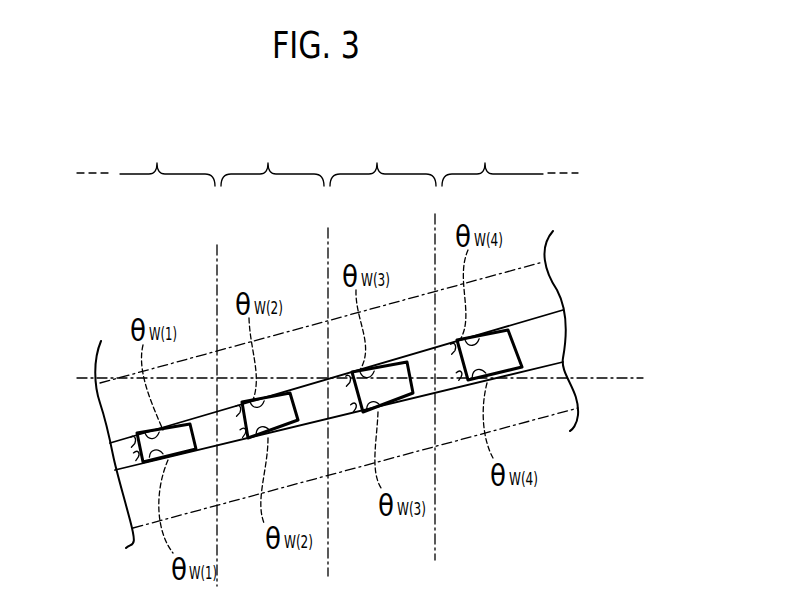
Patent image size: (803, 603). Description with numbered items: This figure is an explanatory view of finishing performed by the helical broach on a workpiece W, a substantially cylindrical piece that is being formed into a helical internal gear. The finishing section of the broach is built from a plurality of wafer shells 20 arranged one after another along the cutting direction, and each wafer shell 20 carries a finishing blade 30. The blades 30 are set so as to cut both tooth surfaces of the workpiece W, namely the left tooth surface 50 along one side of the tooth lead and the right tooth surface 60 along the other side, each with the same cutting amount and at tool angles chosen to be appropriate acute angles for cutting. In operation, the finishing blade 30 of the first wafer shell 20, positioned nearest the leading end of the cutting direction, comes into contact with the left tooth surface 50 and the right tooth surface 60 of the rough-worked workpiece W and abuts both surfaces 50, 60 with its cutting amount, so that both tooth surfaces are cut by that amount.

The workpiece W is at (120, 406).
The wafer shell 20 is at (327, 159).
The finishing blade 30 is at (337, 325).
The left tooth surface 50 is at (120, 442).
The right tooth surface 60 is at (117, 466).